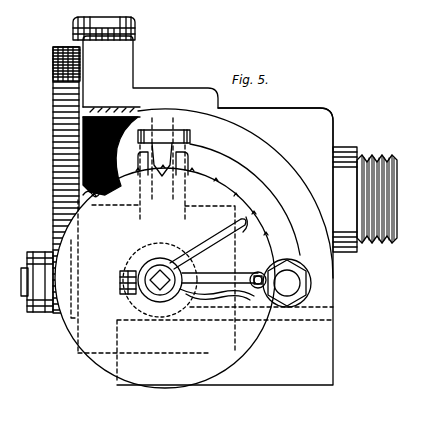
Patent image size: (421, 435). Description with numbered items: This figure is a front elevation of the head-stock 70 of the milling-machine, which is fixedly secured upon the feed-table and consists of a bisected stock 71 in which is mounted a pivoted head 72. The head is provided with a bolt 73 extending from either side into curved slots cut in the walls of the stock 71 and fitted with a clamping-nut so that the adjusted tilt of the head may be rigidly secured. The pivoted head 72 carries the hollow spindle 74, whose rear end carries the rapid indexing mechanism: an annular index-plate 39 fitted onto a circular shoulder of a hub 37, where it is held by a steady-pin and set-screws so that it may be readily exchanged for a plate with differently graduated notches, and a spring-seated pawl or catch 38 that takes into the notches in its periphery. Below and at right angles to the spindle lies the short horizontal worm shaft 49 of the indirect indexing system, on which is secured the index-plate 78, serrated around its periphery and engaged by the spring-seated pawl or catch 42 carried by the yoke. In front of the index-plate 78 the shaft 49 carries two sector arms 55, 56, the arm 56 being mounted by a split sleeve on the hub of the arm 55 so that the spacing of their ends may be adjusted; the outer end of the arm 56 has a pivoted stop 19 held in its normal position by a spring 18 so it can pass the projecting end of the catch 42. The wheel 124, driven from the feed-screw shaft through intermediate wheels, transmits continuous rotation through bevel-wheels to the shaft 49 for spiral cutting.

The spring 18 is at (248, 298).
The stop 19 is at (256, 273).
The hub 37 is at (110, 158).
The spring-seated pawl or catch 38 is at (56, 52).
The index-plate 39 is at (55, 173).
The spring-seated pawl or catch 42 is at (180, 163).
The short horizontal shaft 49 is at (158, 270).
The sector arm 55 is at (215, 246).
The sector arm 56 is at (218, 280).
The head-stock 70 is at (213, 210).
The bisected stock 71 is at (235, 193).
The pivoted head 72 is at (275, 129).
The bolt 73 is at (287, 283).
The hollow spindle 74 is at (350, 146).
The index-plate 78 is at (165, 276).
The wheel 124 is at (53, 320).